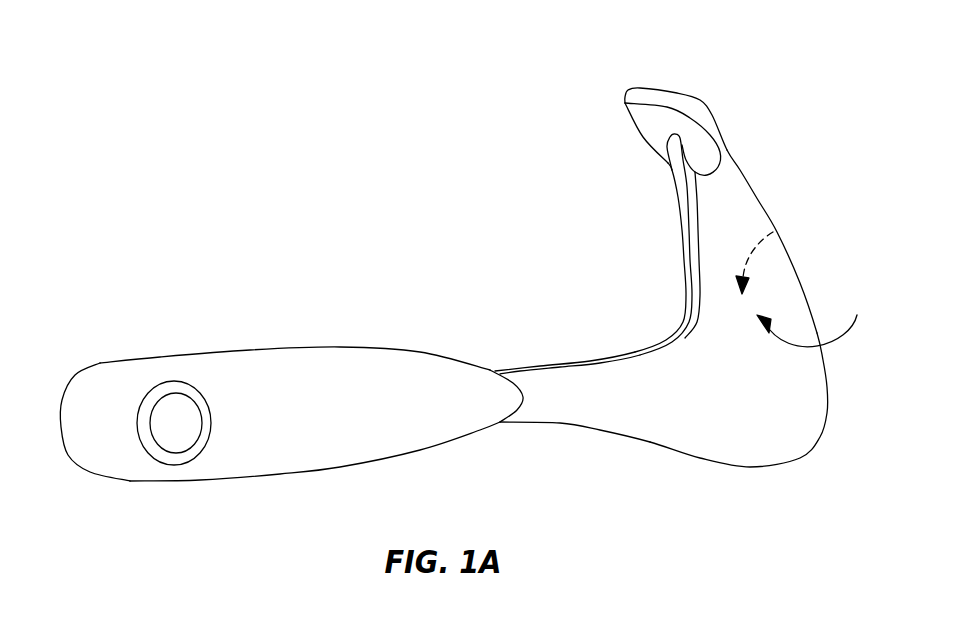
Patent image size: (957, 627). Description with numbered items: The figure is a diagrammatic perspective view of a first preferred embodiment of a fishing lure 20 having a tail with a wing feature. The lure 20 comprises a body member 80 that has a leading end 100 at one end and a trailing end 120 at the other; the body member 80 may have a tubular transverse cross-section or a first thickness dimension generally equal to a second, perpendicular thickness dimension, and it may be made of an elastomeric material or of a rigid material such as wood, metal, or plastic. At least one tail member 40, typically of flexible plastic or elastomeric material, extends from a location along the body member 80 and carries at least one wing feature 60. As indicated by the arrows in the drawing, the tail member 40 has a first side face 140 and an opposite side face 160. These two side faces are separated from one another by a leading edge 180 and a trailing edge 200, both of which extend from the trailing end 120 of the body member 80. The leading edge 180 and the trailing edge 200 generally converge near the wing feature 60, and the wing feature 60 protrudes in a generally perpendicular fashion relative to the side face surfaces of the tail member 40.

The fishing lure 20 is at (323, 158).
The tail member 40 is at (578, 412).
The wing feature 60 is at (688, 110).
The body member 80 is at (285, 368).
The leading end 100 is at (73, 420).
The trailing end 120 is at (506, 390).
The first side face 140 is at (818, 317).
The opposite side face 160 is at (773, 232).
The leading edge 180 is at (645, 342).
The trailing edge 200 is at (655, 442).